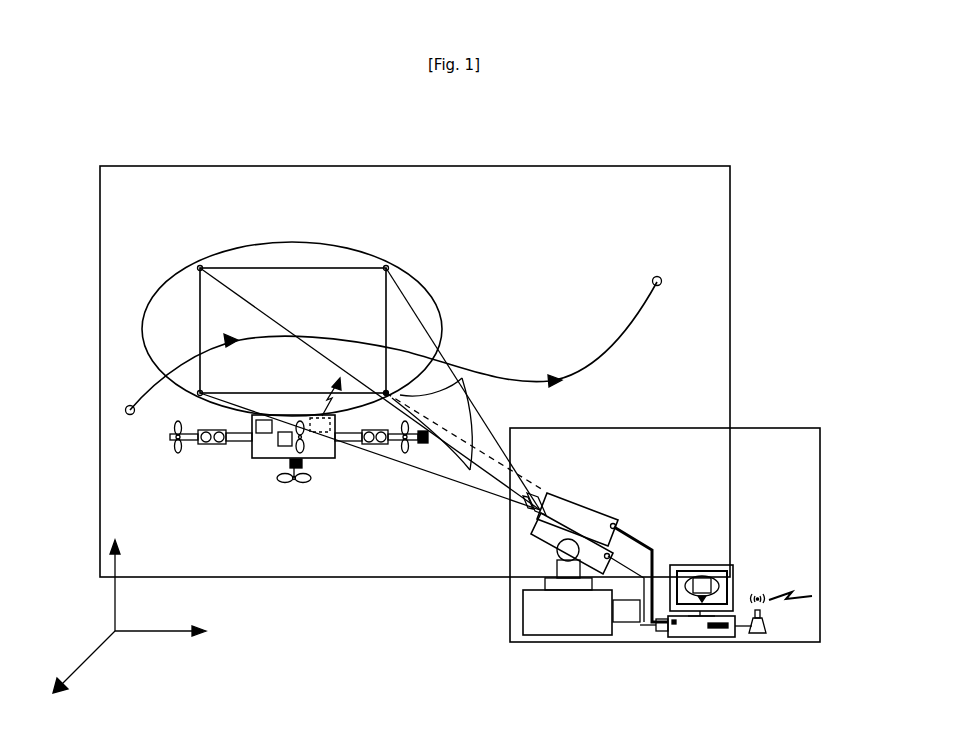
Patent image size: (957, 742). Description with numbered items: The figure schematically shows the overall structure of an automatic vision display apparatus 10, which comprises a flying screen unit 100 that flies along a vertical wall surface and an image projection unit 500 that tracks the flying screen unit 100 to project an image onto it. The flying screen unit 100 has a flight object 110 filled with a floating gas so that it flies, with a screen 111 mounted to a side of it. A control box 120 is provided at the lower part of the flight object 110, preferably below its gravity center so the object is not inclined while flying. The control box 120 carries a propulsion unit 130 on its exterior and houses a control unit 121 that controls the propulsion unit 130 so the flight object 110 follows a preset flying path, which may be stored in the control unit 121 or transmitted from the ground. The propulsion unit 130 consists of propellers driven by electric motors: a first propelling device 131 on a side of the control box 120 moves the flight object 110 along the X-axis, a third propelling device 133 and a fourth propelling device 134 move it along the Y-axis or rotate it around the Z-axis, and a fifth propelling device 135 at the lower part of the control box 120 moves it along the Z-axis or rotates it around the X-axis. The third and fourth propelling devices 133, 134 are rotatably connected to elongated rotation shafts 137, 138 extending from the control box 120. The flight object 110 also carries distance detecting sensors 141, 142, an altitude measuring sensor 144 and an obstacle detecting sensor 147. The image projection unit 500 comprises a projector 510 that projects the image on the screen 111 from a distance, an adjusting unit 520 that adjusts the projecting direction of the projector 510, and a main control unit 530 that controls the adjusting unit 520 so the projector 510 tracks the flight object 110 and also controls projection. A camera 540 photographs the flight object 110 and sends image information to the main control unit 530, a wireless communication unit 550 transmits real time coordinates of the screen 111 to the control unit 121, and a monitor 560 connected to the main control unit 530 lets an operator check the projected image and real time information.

The automatic vision display apparatus 10 is at (723, 98).
The flying screen unit 100 is at (244, 224).
The flight object 110 is at (302, 242).
The screen 111 is at (352, 268).
The control box 120 is at (268, 462).
The control unit 121 is at (246, 458).
The propulsion unit 130 is at (278, 505).
The first propelling device 131 is at (308, 458).
The third propelling device 133 is at (178, 450).
The fourth propelling device 134 is at (405, 452).
The fifth propelling device 135 is at (283, 487).
The rotation shaft 137 is at (245, 432).
The rotation shaft 138 is at (350, 418).
The distance detecting sensor 141 is at (212, 445).
The distance detecting sensor 142 is at (375, 445).
The altitude measuring sensor 144 is at (355, 447).
The obstacle detecting sensor 147 is at (450, 465).
The image projection unit 500 is at (800, 410).
The projector 510 is at (535, 515).
The adjusting unit 520 is at (523, 595).
The main control unit 530 is at (686, 638).
The camera 540 is at (612, 488).
The wireless communication unit 550 is at (770, 622).
The monitor 560 is at (700, 565).